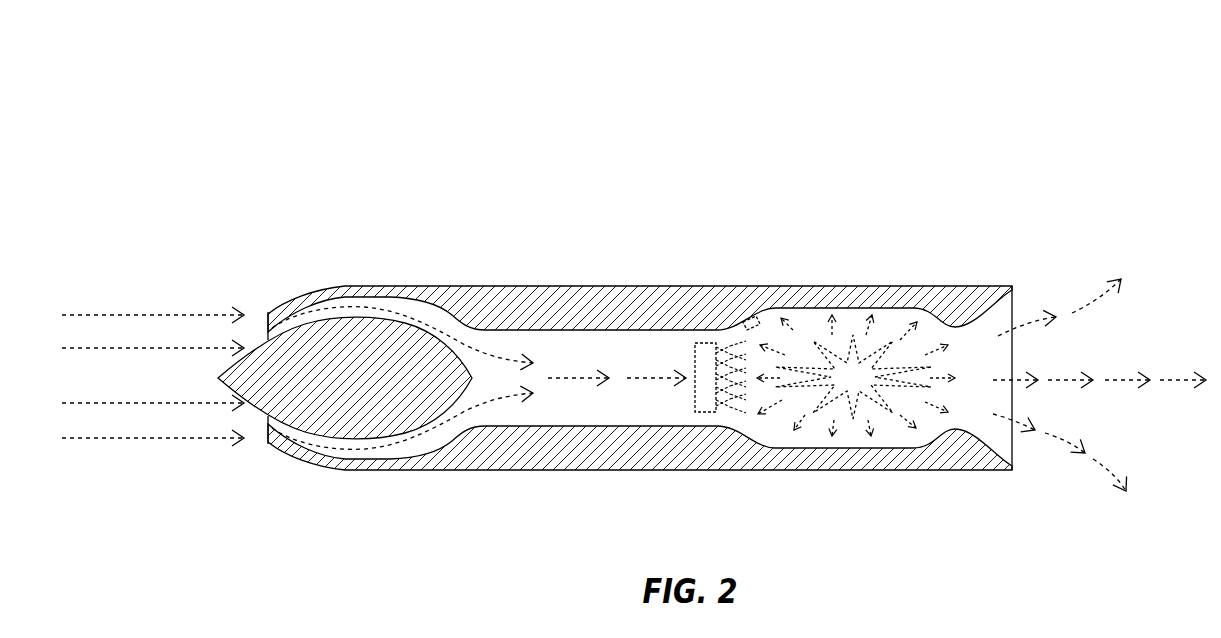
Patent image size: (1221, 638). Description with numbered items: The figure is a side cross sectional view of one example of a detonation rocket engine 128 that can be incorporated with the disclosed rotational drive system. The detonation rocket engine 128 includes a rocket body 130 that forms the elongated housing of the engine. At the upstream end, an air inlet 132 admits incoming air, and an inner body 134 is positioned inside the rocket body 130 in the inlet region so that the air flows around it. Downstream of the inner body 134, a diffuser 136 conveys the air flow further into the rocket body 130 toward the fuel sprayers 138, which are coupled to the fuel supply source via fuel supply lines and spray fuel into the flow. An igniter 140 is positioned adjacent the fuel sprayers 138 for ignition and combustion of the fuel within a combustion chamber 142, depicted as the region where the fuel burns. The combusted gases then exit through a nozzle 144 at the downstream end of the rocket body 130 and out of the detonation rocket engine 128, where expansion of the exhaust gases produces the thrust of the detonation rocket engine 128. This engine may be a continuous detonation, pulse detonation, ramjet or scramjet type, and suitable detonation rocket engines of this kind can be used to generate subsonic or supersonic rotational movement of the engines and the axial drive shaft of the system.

The detonation rocket engine 128 is at (511, 70).
The rocket body 130 is at (730, 290).
The air inlet 132 is at (250, 306).
The inner body 134 is at (343, 403).
The diffuser 136 is at (531, 345).
The fuel sprayers 138 is at (703, 398).
The igniter 140 is at (752, 318).
The combustion chamber 142 is at (860, 380).
The nozzle 144 is at (971, 320).